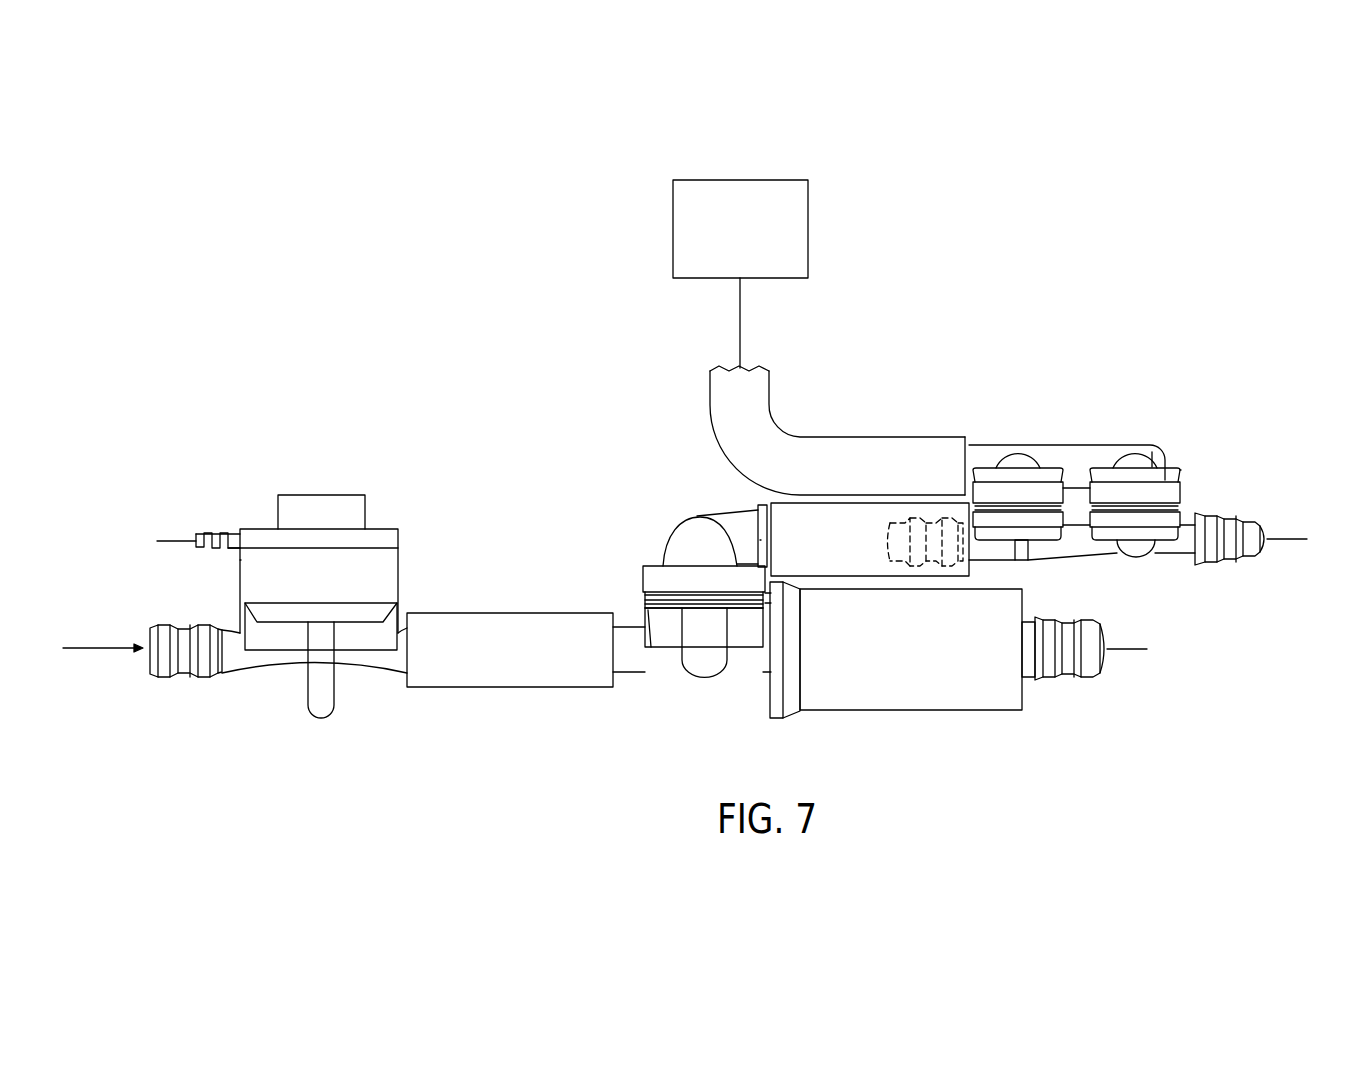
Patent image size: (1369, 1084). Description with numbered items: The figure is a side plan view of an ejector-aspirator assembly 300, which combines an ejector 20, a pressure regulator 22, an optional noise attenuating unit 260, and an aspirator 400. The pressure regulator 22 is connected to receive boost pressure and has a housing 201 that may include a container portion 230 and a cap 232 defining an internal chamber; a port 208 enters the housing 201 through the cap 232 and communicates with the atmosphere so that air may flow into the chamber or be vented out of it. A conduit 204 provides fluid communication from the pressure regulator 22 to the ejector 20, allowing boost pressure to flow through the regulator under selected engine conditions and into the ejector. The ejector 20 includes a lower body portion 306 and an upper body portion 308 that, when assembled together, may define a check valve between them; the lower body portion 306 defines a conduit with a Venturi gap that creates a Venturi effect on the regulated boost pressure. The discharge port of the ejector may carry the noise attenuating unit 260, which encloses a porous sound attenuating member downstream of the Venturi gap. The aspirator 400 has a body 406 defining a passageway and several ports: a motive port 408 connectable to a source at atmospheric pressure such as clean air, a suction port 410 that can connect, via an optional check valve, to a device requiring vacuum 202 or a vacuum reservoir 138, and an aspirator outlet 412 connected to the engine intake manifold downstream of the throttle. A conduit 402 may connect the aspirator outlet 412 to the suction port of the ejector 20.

The ejector-aspirator assembly 300 is at (1082, 224).
The vacuum reservoir 138 is at (740, 229).
The device requiring vacuum 202 is at (787, 242).
The pressure regulator 22 is at (241, 478).
The port 208 is at (208, 530).
The cap 232 is at (386, 529).
The container portion 230 is at (243, 581).
The housing 201 is at (415, 563).
The conduit 204 is at (481, 687).
The ejector 20 is at (660, 507).
The upper body portion 308 is at (697, 524).
The lower body portion 306 is at (641, 667).
The conduit 402 is at (881, 577).
The aspirator outlet 412 is at (925, 505).
The suction port 410 is at (1117, 447).
The aspirator 400 is at (1200, 441).
The body 406 is at (1078, 545).
The motive port 408 is at (1250, 565).
The noise attenuating unit 260 is at (943, 710).